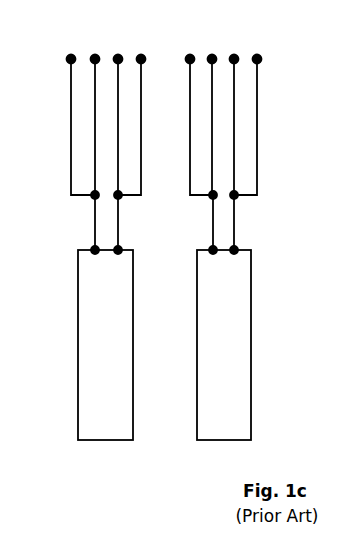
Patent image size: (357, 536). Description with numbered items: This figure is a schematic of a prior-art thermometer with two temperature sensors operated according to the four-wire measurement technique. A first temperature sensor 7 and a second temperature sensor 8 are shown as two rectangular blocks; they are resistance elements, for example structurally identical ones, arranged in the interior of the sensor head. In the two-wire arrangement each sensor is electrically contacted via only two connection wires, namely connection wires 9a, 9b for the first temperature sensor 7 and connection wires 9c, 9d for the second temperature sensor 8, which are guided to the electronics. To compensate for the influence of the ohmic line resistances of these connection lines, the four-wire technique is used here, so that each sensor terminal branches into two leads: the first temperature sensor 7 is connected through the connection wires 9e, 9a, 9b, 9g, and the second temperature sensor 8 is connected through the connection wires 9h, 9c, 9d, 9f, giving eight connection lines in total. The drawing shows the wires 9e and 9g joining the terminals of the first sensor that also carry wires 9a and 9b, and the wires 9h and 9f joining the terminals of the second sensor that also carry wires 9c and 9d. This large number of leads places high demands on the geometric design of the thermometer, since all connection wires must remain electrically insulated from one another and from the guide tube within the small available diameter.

The first temperature sensor 7 is at (105, 315).
The second temperature sensor 8 is at (224, 315).
The connection wire 9a is at (93, 113).
The connection wire 9b is at (117, 113).
The connection wire 9c is at (211, 113).
The connection wire 9d is at (234, 113).
The connection wire 9e is at (76, 113).
The connection wire 9f is at (250, 113).
The connection wire 9g is at (135, 113).
The connection wire 9h is at (195, 113).